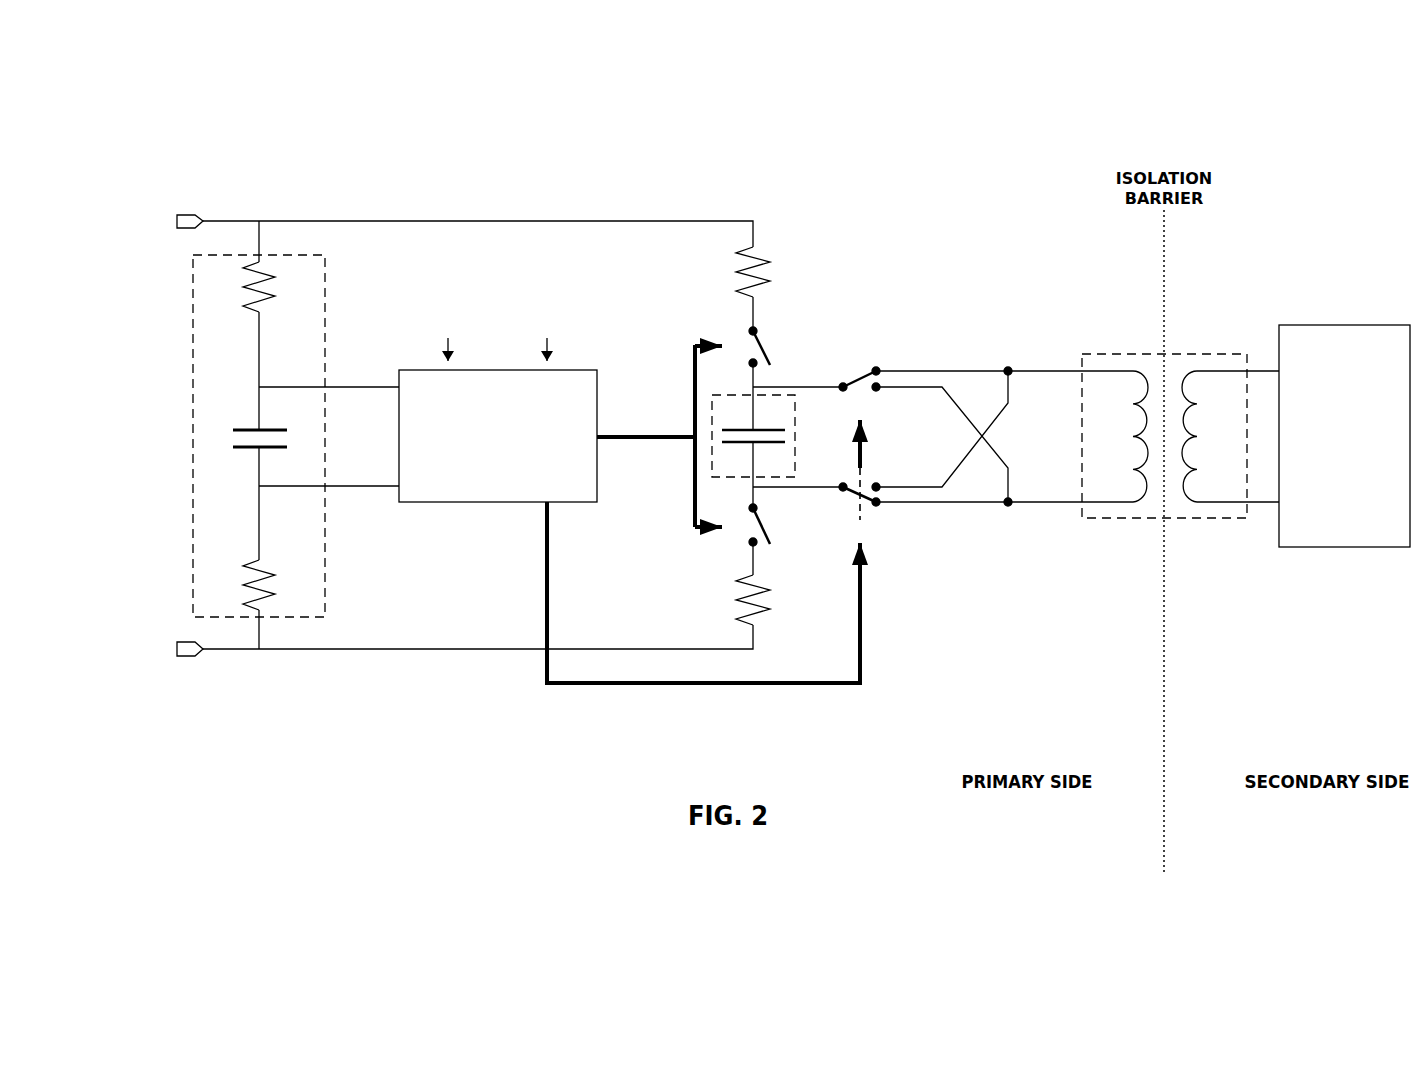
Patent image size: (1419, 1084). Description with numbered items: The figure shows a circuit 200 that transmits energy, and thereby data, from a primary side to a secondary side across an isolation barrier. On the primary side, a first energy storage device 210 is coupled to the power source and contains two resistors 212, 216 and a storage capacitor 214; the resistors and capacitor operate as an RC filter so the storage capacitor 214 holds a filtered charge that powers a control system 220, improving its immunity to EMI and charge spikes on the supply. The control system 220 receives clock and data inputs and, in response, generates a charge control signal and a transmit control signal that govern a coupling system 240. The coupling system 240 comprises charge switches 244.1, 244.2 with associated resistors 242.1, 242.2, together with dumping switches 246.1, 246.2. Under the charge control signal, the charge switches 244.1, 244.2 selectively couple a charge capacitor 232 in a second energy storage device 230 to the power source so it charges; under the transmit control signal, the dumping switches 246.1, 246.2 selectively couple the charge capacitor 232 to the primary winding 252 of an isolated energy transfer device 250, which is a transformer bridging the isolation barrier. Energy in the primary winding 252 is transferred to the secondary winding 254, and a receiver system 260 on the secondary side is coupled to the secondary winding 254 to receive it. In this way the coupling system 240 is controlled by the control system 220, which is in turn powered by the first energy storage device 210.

The circuit 200 is at (410, 760).
The first energy storage device 210 is at (193, 322).
The resistor 212 is at (318, 301).
The storage capacitor 214 is at (318, 421).
The resistor 216 is at (318, 593).
The control system 220 is at (480, 474).
The second energy storage device 230 is at (732, 392).
The charge capacitor 232 is at (791, 426).
The coupling system 240 is at (858, 313).
The resistor 242.1 is at (822, 281).
The resistor 242.2 is at (822, 616).
The charge switch 244.1 is at (822, 360).
The charge switch 244.2 is at (822, 538).
The dumping switch 246.1 is at (902, 365).
The dumping switch 246.2 is at (930, 481).
The isolated energy transfer device 250 is at (1149, 646).
The primary winding 252 is at (1126, 446).
The secondary winding 254 is at (1243, 446).
The receiver system 260 is at (1326, 470).